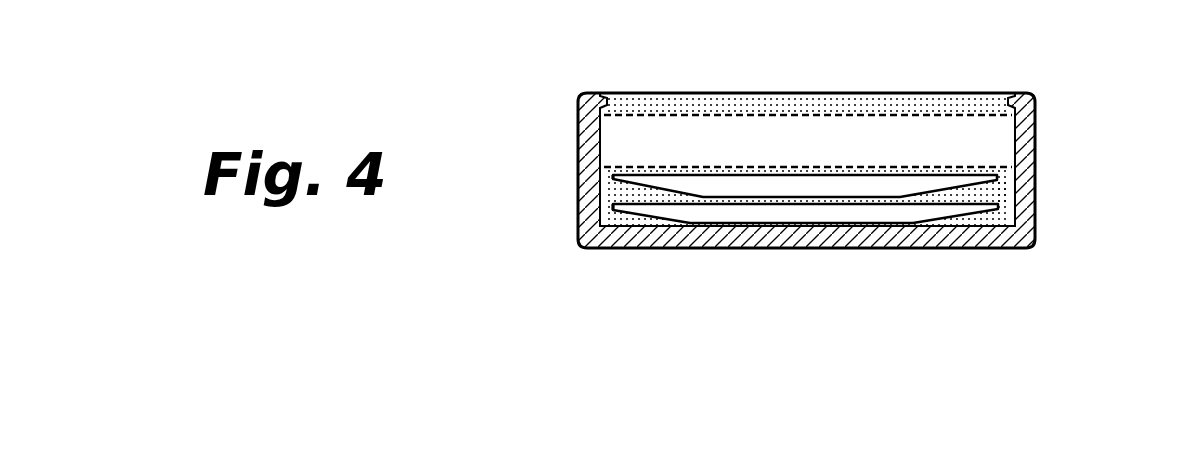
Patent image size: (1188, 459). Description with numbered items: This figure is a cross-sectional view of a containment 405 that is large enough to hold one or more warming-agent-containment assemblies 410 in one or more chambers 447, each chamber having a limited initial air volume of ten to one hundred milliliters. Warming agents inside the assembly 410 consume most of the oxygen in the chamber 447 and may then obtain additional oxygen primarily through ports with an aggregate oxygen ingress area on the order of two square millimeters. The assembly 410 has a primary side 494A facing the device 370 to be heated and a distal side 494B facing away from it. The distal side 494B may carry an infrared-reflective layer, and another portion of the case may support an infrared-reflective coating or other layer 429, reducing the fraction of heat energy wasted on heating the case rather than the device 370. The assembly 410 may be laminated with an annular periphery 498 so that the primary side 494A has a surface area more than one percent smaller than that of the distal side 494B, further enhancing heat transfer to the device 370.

The containment 405 is at (502, 263).
The infrared-reflective layer 429 is at (650, 226).
The device 370 is at (820, 153).
The warming-agent-containment assembly 410 is at (827, 217).
The primary side 494A is at (870, 167).
The distal side 494B is at (973, 212).
The chamber 447 is at (1003, 190).
The annular periphery 498 is at (615, 203).